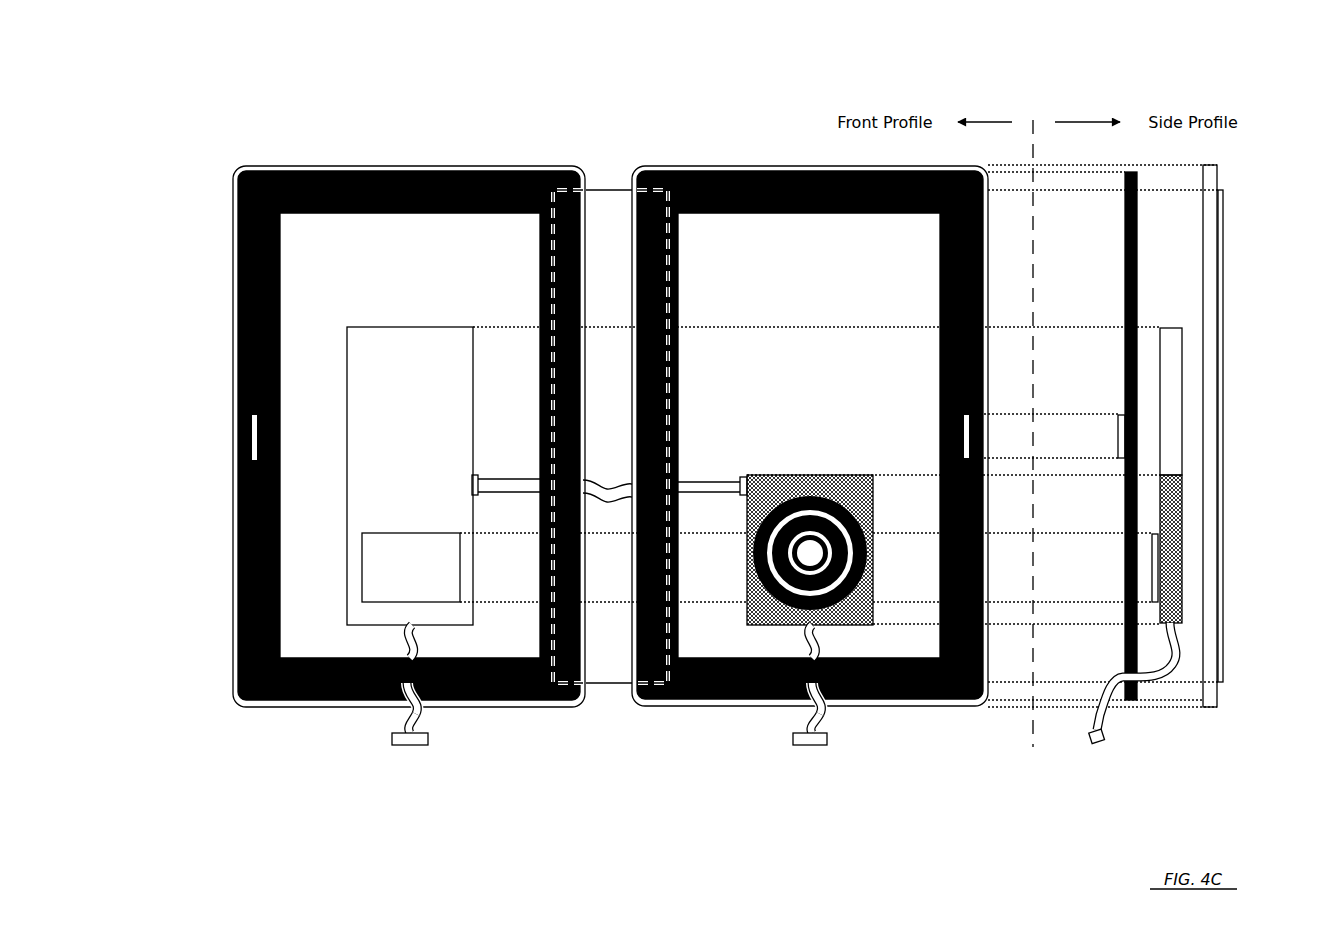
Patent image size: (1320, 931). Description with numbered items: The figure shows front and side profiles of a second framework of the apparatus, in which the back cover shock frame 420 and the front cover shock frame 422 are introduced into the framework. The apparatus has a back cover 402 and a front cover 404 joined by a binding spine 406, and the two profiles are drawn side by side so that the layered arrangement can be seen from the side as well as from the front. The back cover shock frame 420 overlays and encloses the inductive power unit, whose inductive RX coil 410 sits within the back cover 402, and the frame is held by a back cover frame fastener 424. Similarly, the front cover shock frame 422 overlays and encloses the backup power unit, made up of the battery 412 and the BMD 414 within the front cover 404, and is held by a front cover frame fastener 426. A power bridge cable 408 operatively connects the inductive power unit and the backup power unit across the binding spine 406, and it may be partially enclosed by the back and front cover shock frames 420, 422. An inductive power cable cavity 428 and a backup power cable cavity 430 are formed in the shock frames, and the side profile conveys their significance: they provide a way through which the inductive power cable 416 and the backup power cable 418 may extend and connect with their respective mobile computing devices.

The back cover 402 is at (1201, 223).
The front cover 404 is at (395, 297).
The binding spine 406 is at (1248, 350).
The power bridge cable 408 is at (610, 503).
The inductive RX coil 410 is at (1247, 498).
The battery 412 is at (1170, 302).
The BMD 414 is at (1247, 568).
The inductive power cable 416 is at (804, 750).
The backup power cable 418 is at (420, 752).
The back cover shock frame 420 is at (1122, 368).
The front cover shock frame 422 is at (323, 164).
The back cover frame fastener 424 is at (1115, 436).
The front cover frame fastener 426 is at (253, 413).
The inductive power cable cavity 428 is at (825, 683).
The backup power cable cavity 430 is at (399, 681).